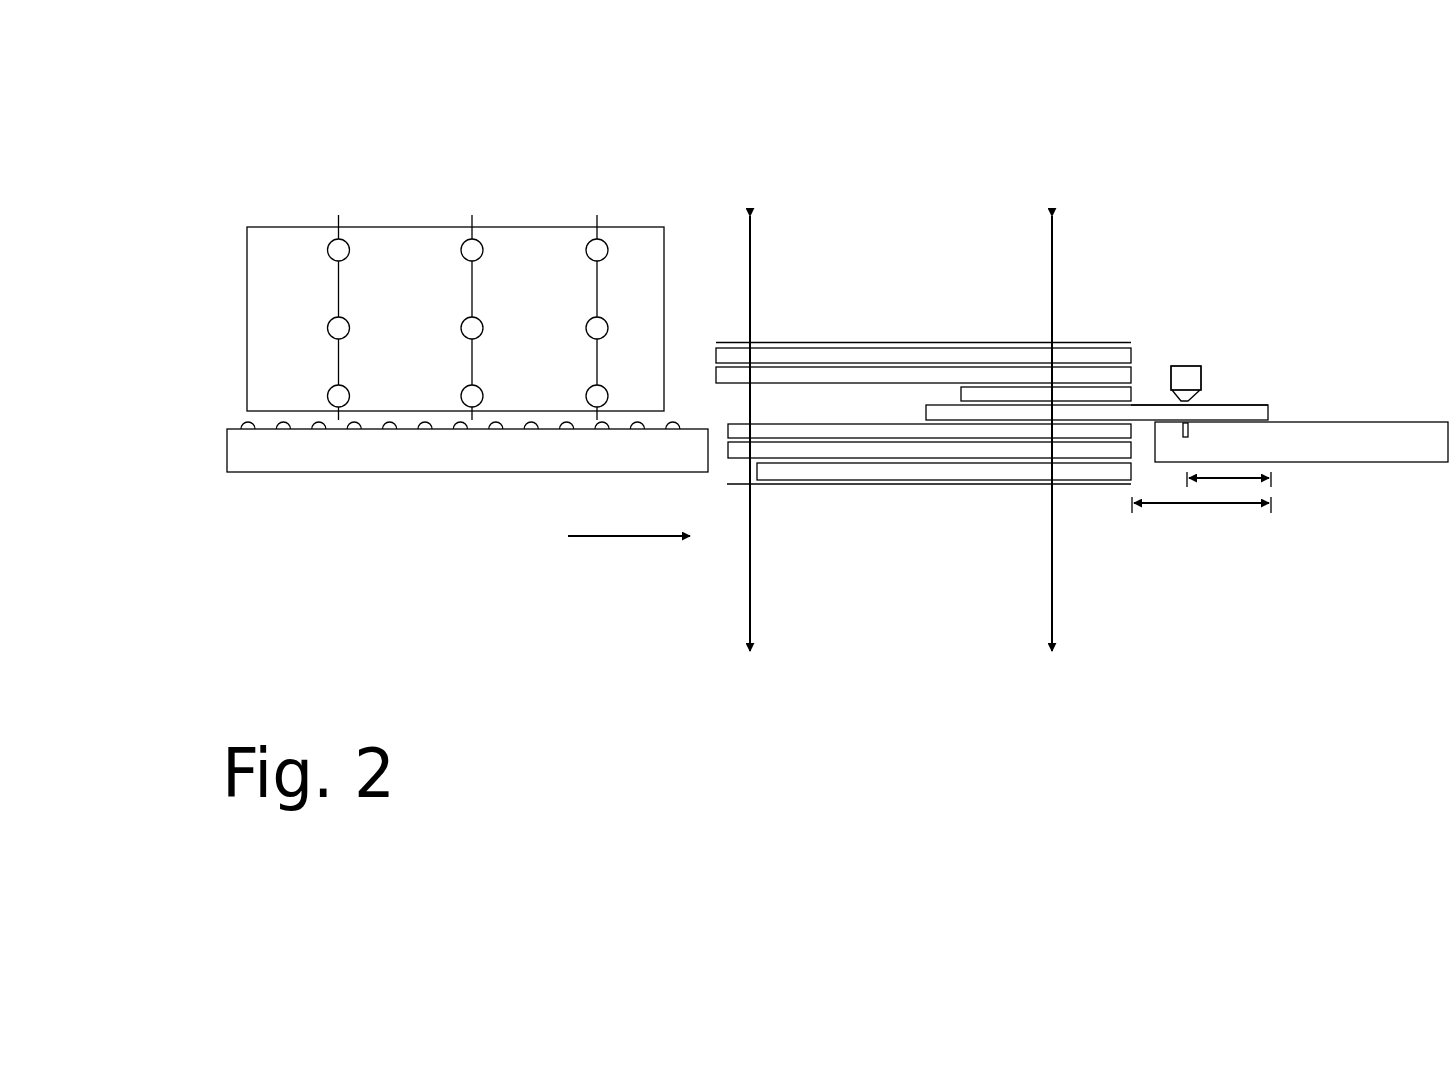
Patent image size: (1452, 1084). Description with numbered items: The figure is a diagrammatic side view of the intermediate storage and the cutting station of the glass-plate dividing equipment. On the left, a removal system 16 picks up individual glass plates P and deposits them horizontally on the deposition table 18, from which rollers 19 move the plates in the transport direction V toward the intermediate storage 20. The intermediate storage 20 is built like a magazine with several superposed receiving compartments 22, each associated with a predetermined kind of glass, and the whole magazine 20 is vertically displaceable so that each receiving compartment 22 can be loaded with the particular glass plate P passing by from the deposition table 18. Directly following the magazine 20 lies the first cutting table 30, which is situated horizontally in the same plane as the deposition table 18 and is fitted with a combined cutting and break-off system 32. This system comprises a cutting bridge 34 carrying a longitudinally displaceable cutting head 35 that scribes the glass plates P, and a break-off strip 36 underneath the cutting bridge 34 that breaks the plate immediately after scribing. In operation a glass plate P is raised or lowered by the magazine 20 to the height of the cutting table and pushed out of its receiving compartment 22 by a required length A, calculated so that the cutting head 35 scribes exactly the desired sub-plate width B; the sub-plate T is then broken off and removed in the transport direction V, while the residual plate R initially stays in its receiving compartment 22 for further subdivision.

The removal system 16 is at (582, 312).
The deposition table 18 is at (467, 453).
The rollers 19 is at (242, 427).
The intermediate storage 20 is at (841, 204).
The receiving compartment 22 is at (896, 392).
The first cutting table 30 is at (1284, 483).
The combined cutting and break-off system 32 is at (1161, 343).
The cutting bridge 34 is at (1193, 376).
The cutting head 35 is at (1190, 400).
The break-off strip 36 is at (1183, 430).
The glass plate P is at (418, 243).
The residual plate R is at (985, 413).
The sub-plate T is at (1242, 410).
The transport direction V is at (615, 537).
The required length A is at (1170, 507).
The sub-plate width B is at (1223, 480).